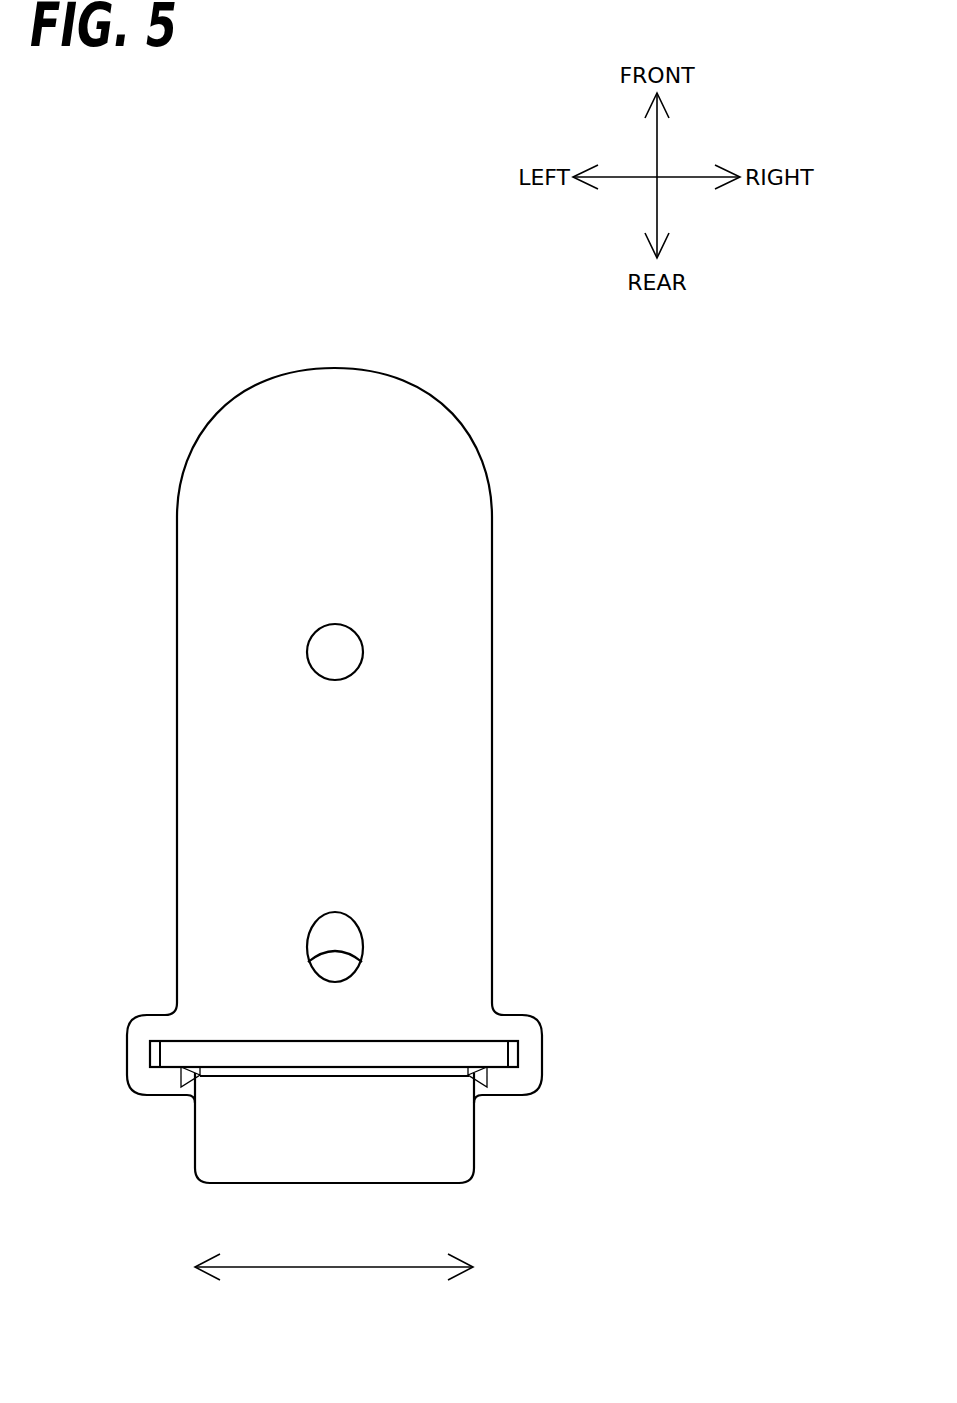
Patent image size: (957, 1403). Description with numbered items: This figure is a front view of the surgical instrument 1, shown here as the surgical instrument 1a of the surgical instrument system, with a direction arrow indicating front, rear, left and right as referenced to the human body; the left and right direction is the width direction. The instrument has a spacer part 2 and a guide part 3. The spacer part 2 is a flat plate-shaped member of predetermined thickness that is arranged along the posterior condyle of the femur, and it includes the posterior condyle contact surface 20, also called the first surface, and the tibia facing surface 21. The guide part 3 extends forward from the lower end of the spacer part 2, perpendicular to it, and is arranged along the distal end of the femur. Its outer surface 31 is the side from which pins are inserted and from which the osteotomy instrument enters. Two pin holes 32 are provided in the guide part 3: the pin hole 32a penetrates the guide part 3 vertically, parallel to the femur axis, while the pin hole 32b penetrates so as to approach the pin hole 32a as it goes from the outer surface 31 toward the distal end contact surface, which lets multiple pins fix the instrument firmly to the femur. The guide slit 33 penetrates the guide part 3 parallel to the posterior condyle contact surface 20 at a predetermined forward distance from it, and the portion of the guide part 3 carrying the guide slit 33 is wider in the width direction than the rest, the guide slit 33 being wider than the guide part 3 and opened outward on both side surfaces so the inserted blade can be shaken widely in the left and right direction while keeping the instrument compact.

The surgical instrument 1 is at (380, 327).
The surgical instrument 1a is at (380, 327).
The spacer part 2 is at (473, 1152).
The tibia facing surface 21 is at (223, 1185).
The posterior condyle contact surface 20 is at (243, 1078).
The guide part 3 is at (472, 438).
The outer surface 31 is at (248, 538).
The pin hole 32 is at (475, 790).
The pin hole 32a is at (537, 612).
The pin hole 32b is at (520, 893).
The guide slit 33 is at (357, 1041).